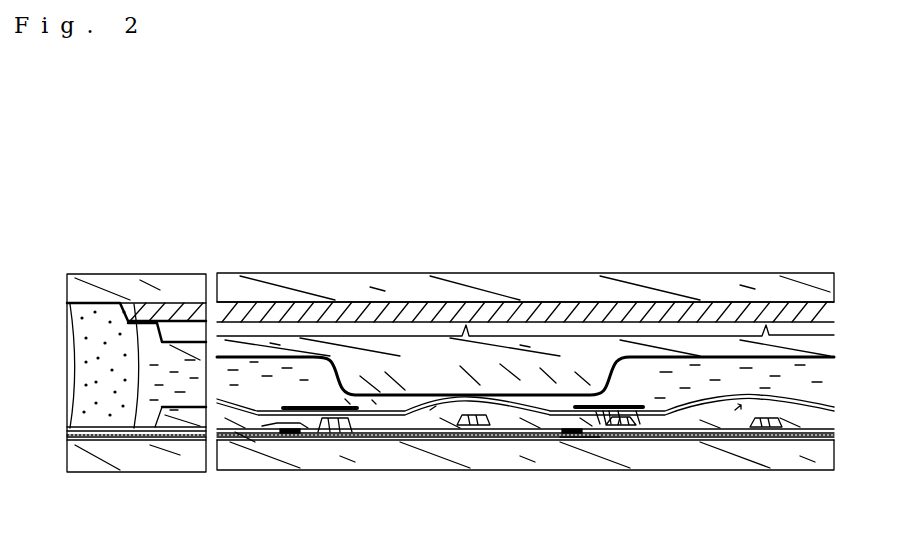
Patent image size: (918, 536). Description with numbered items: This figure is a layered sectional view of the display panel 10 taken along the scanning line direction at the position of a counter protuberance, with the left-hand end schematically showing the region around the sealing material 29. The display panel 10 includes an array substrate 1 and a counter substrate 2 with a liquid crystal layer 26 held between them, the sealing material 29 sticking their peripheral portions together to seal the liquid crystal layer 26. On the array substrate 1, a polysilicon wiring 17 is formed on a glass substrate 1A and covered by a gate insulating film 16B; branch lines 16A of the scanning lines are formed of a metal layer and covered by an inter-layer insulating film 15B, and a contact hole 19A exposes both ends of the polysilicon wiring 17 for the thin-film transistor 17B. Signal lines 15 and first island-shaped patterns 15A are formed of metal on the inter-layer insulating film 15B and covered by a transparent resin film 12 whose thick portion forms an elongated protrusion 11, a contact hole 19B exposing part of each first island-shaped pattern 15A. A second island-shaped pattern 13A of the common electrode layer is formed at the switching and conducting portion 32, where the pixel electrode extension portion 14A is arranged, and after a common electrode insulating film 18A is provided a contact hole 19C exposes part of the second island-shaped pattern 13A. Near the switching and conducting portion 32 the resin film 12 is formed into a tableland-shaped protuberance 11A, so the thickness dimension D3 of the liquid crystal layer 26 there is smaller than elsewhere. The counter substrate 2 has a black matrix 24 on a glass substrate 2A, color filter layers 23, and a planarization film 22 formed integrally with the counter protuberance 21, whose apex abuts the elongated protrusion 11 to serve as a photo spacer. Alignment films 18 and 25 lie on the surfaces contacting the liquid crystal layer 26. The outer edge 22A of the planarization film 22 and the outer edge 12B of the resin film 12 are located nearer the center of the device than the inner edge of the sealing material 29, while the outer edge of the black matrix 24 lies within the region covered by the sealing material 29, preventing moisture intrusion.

The array substrate 1 is at (884, 382).
The glass substrate 1A is at (834, 458).
The counter substrate 2 is at (876, 272).
The glass substrate 2A is at (834, 290).
The display panel 10 is at (102, 245).
The elongated protrusion 11 is at (432, 408).
The tableland-shaped protuberance 11A is at (565, 404).
The resin film 12 is at (834, 427).
The outer edge of the resin layer 12B is at (162, 412).
The second island-shaped pattern 13A is at (612, 418).
The pixel electrode extension portion 14A is at (606, 413).
The signal line 15 is at (462, 420).
The first island-shaped pattern 15A is at (334, 426).
The inter-layer insulating film 15B is at (834, 433).
The branch line 16A is at (292, 433).
The gate insulating film 16B is at (834, 437).
The polysilicon wiring 17 is at (834, 441).
The thin-film transistor 17B is at (580, 448).
The alignment film 18 is at (834, 404).
The common electrode insulating film 18A is at (834, 412).
The contact hole 19A is at (620, 418).
The contact hole 19B is at (640, 418).
The contact hole 19C is at (600, 415).
The counter protuberance 21 is at (453, 380).
The planarization film 22 is at (834, 336).
The outer edge of the planarization film 22A is at (162, 333).
The color filter layer 23 is at (834, 323).
The black matrix 24 is at (834, 304).
The alignment film 25 is at (834, 354).
The liquid crystal layer 26 is at (805, 370).
The sealing material 29 is at (93, 322).
The switching and conducting portion 32 is at (301, 392).
The thickness dimension of the liquid crystal layer D3 is at (643, 358).